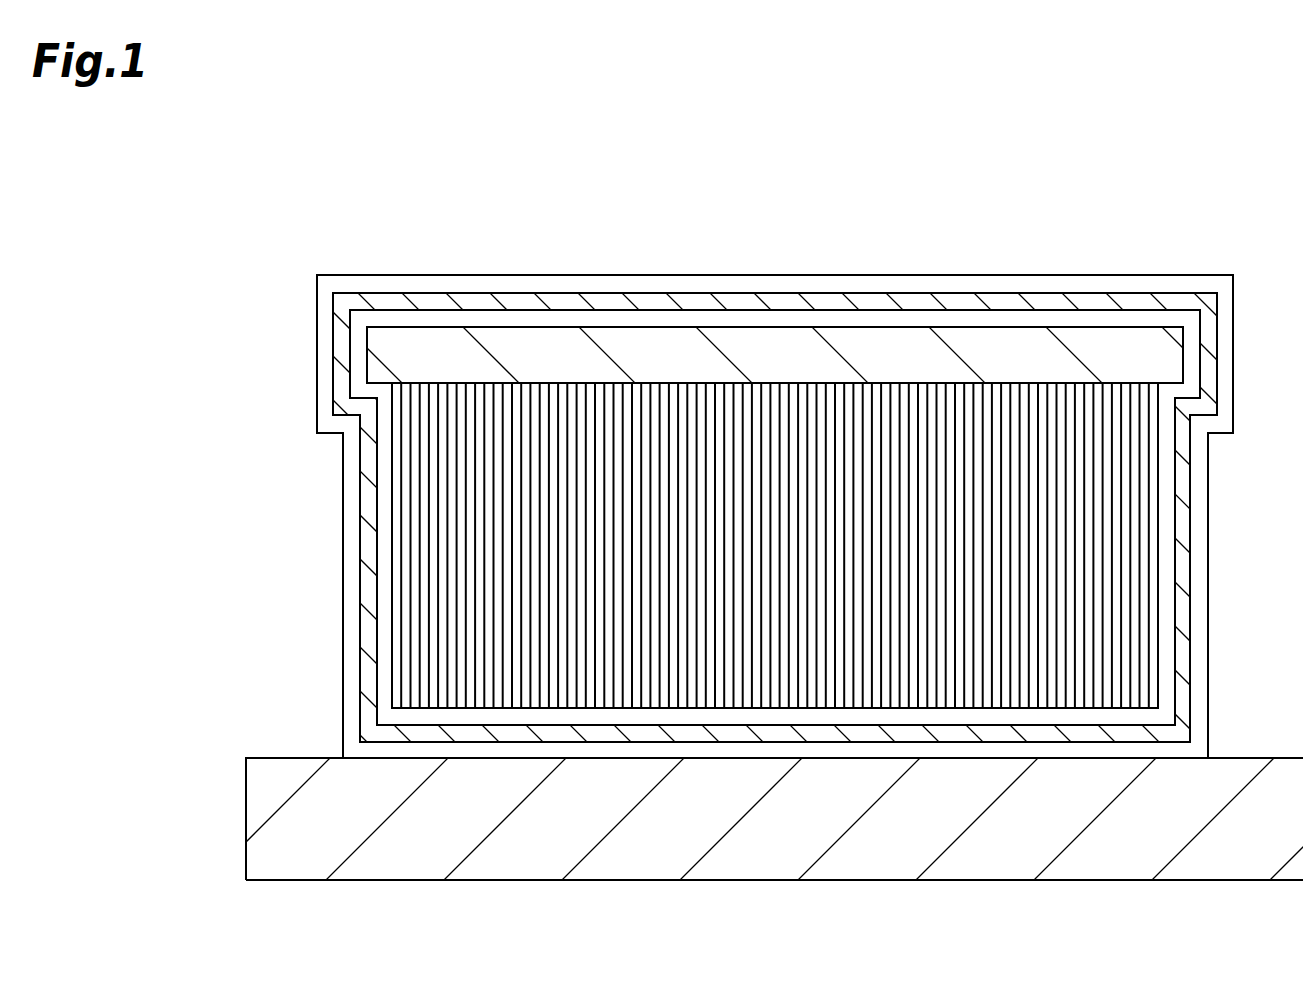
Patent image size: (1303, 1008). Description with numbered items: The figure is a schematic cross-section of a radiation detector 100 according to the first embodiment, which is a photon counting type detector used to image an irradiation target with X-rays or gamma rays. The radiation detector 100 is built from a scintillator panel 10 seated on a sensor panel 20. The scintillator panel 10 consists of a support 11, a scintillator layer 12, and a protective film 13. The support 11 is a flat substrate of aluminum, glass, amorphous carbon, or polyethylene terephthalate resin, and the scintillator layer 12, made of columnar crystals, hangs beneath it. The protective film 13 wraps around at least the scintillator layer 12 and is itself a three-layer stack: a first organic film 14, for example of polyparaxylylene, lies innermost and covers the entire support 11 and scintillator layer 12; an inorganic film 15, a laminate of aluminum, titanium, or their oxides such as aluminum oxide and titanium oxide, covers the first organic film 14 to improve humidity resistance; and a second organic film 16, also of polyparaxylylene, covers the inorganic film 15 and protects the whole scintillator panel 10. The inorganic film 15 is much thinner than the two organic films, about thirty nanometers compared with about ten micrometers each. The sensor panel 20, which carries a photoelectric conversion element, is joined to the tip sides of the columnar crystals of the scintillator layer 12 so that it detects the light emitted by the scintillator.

The radiation detector 100 is at (1166, 223).
The scintillator panel 10 is at (315, 525).
The support 11 is at (1170, 353).
The scintillator layer 12 is at (1160, 502).
The protective film 13 is at (360, 207).
The first organic film 14 is at (483, 318).
The inorganic film 15 is at (430, 302).
The second organic film 16 is at (378, 284).
The sensor panel 20 is at (228, 818).